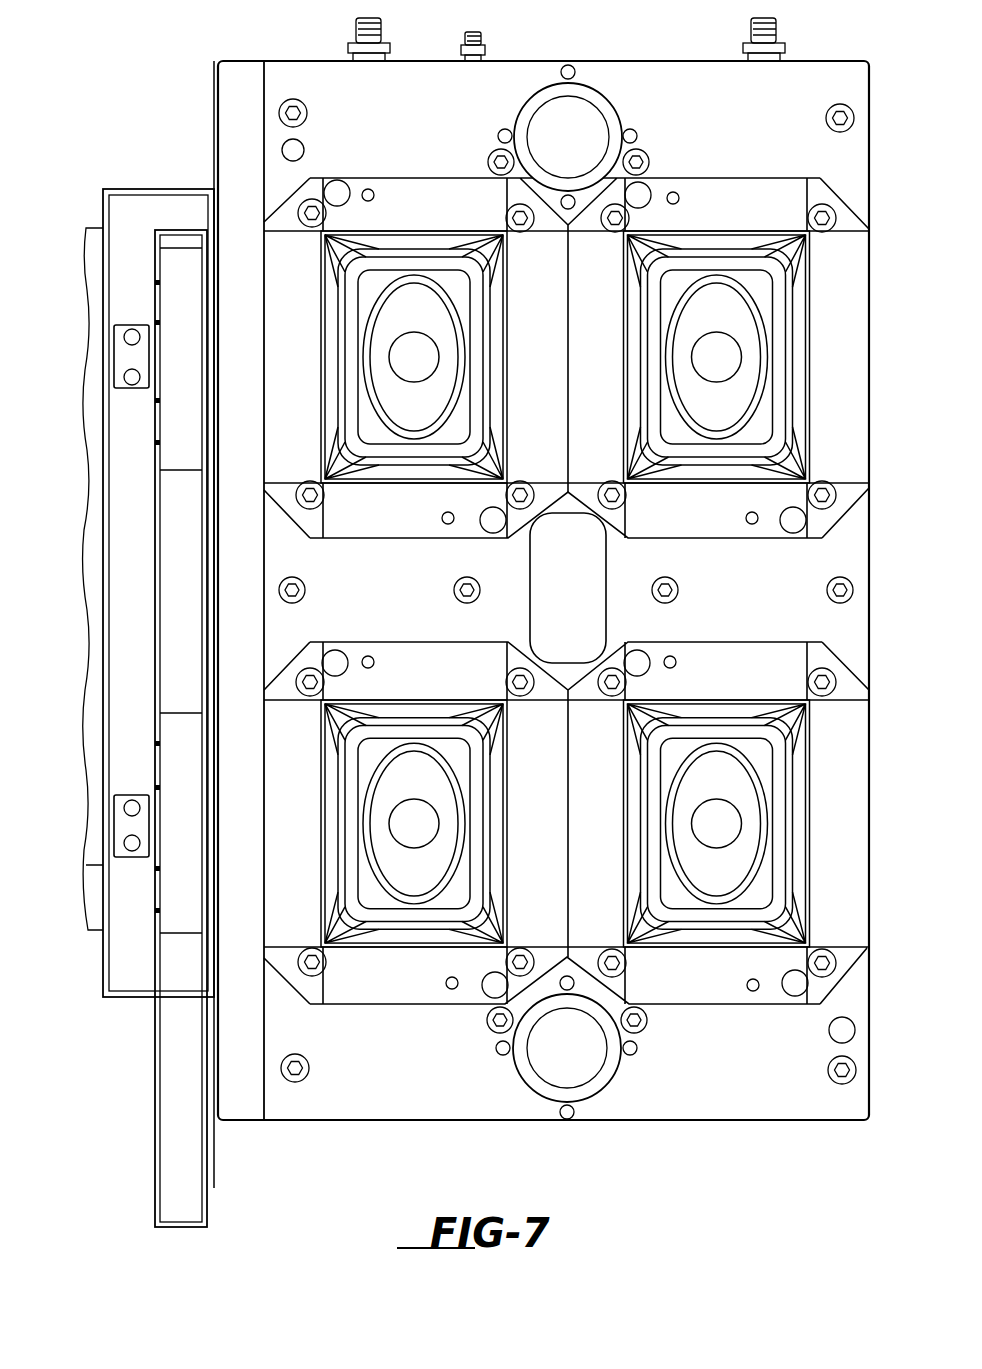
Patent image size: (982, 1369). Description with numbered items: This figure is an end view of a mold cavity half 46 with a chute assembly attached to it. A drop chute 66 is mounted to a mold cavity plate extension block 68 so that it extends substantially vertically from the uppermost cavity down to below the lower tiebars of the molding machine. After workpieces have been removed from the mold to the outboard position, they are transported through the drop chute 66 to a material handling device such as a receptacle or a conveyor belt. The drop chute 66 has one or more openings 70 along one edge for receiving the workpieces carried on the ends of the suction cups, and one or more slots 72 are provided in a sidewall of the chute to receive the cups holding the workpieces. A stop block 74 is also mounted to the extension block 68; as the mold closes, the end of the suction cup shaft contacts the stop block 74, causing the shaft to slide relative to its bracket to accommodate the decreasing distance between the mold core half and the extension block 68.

The mold cavity half 46 is at (673, 88).
The drop chute 66 is at (136, 566).
The mold cavity plate extension block 68 is at (152, 205).
The openings 70 is at (190, 350).
The slots 72 is at (158, 303).
The stop block 74 is at (122, 359).